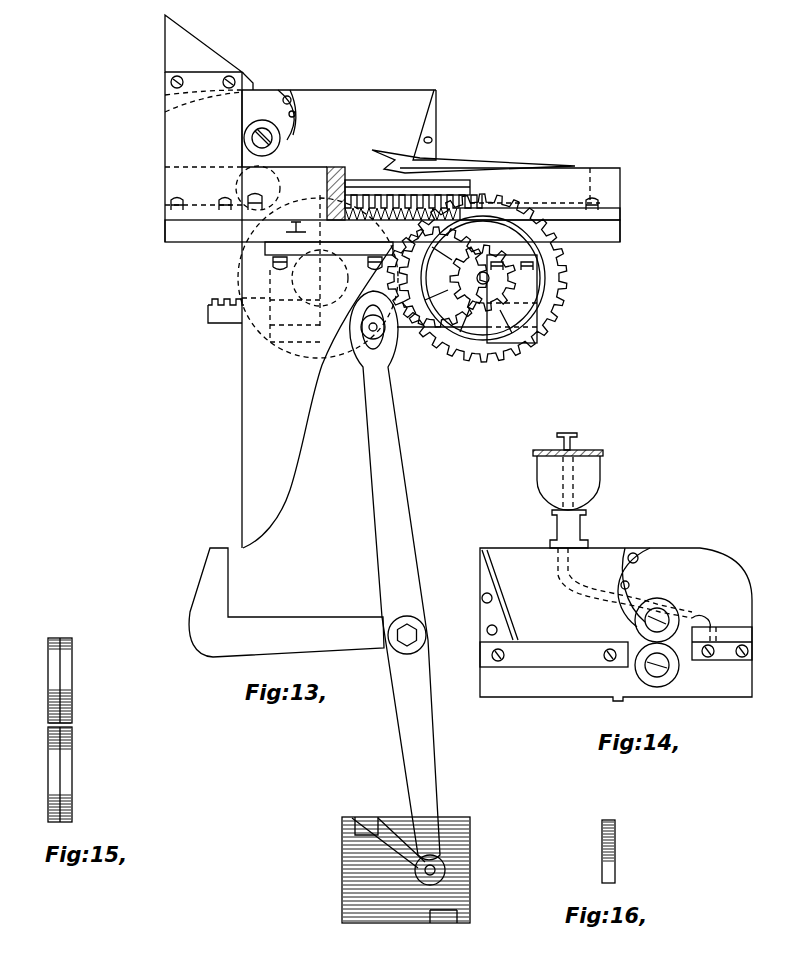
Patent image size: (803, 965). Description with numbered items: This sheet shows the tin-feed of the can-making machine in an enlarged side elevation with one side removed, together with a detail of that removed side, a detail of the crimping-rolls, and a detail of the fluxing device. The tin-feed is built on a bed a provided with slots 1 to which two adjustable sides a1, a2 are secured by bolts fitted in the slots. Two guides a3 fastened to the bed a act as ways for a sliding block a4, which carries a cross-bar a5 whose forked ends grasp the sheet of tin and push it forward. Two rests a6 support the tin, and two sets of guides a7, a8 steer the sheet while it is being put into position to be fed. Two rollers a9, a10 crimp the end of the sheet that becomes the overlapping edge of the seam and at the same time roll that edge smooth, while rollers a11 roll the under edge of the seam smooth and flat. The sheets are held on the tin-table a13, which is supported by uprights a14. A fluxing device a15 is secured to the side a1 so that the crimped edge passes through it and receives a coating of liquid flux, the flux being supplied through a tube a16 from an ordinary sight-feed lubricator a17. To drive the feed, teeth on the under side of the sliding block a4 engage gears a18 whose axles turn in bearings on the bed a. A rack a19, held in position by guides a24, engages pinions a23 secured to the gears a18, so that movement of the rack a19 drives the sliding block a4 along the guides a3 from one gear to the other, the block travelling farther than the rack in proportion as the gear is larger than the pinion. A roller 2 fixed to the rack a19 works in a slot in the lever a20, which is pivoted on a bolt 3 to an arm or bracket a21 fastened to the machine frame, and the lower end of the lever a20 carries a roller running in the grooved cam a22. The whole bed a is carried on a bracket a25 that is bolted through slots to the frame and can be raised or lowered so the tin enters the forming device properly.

In FIG. 13, the bed a is at (392, 226).
In FIG. 13, the adjustable side a1 is at (412, 125).
In FIG. 14, the adjustable side a1 is at (616, 624).
In FIG. 13, the adjustable side a2 is at (339, 155).
In FIG. 13, the guide a3 is at (510, 205).
In FIG. 13, the sliding block a4 is at (392, 155).
In FIG. 13, the cross-bar a5 is at (490, 165).
In FIG. 14, the rest a6 is at (554, 654).
In FIG. 14, the guide a7 is at (498, 600).
In FIG. 14, the guide a8 is at (625, 587).
In FIG. 14, the crimping roller a9 is at (672, 600).
In FIG. 15, the crimping roller a9 is at (72, 688).
In FIG. 14, the crimping roller a10 is at (679, 677).
In FIG. 15, the crimping roller a10 is at (72, 775).
In FIG. 13, the roller a11 is at (252, 138).
In FIG. 13, the tin-table a13 is at (209, 63).
In FIG. 13, the upright a14 is at (222, 157).
In FIG. 14, the fluxing device a15 is at (730, 627).
In FIG. 16, the fluxing device a15 is at (615, 838).
In FIG. 14, the tube a16 is at (702, 616).
In FIG. 14, the sight-feed lubricator a17 is at (537, 480).
In FIG. 13, the gear a18 is at (568, 284).
In FIG. 13, the rack a19 is at (437, 277).
In FIG. 13, the lever a20 is at (397, 588).
In FIG. 13, the arm or bracket a21 is at (286, 602).
In FIG. 13, the grooved cam a22 is at (382, 870).
In FIG. 13, the pinion a23 is at (476, 278).
In FIG. 13, the guide a24 is at (512, 299).
In FIG. 13, the bracket a25 is at (303, 371).
In FIG. 13, the slot 1 is at (286, 228).
In FIG. 13, the roller 2 is at (380, 330).
In FIG. 13, the bolt 3 is at (396, 635).